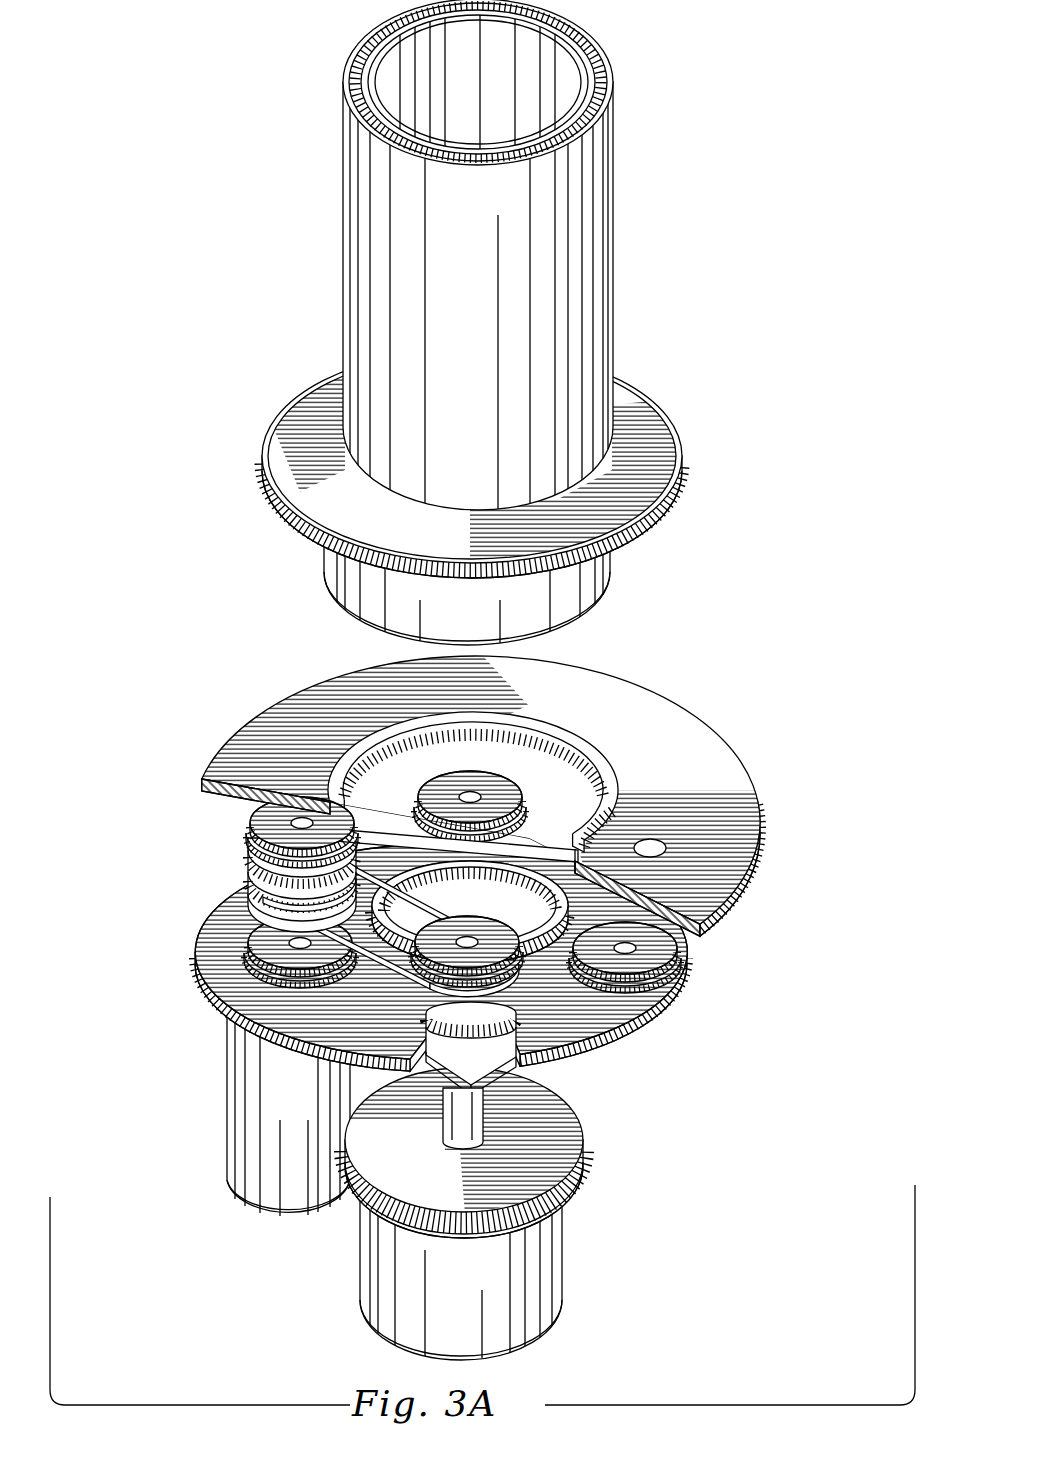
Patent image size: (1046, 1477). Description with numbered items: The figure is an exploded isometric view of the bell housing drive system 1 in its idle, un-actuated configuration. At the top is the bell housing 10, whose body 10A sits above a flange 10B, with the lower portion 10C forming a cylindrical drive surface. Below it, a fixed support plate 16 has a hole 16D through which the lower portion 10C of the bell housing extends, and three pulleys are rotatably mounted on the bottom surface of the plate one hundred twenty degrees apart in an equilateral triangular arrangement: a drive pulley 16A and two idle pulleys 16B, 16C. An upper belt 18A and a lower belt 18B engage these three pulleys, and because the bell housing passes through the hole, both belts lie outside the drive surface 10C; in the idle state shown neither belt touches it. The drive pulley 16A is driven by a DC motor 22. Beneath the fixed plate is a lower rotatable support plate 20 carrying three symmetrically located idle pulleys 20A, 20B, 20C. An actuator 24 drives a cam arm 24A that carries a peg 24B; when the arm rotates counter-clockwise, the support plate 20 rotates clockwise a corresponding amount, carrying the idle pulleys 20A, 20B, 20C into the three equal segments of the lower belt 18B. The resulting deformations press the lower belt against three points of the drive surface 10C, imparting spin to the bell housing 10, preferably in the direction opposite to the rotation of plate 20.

The dispensing apparatus 1 is at (213, 1290).
The bell housing 10 is at (620, 197).
The cylindrical body 10A is at (598, 278).
The flange 10B is at (634, 412).
The lower portion of bell housing 10C is at (604, 590).
The fixed support plate 16 is at (657, 722).
The drive pulley 16A is at (244, 876).
The idle pulley 16B is at (672, 923).
The idle pulley 16C is at (411, 1014).
The hole 16D is at (548, 744).
The upper belt 18A is at (377, 797).
The lower belt 18B is at (397, 850).
The lower rotatable support plate 20 is at (600, 1018).
The idle pulley 20A is at (660, 953).
The idle pulley 20B is at (308, 992).
The idle pulley 20C is at (496, 788).
The DC motor 22 is at (238, 1122).
The actuator 24 is at (372, 1273).
The cam arm 24A is at (496, 1097).
The peg 24B is at (511, 1032).